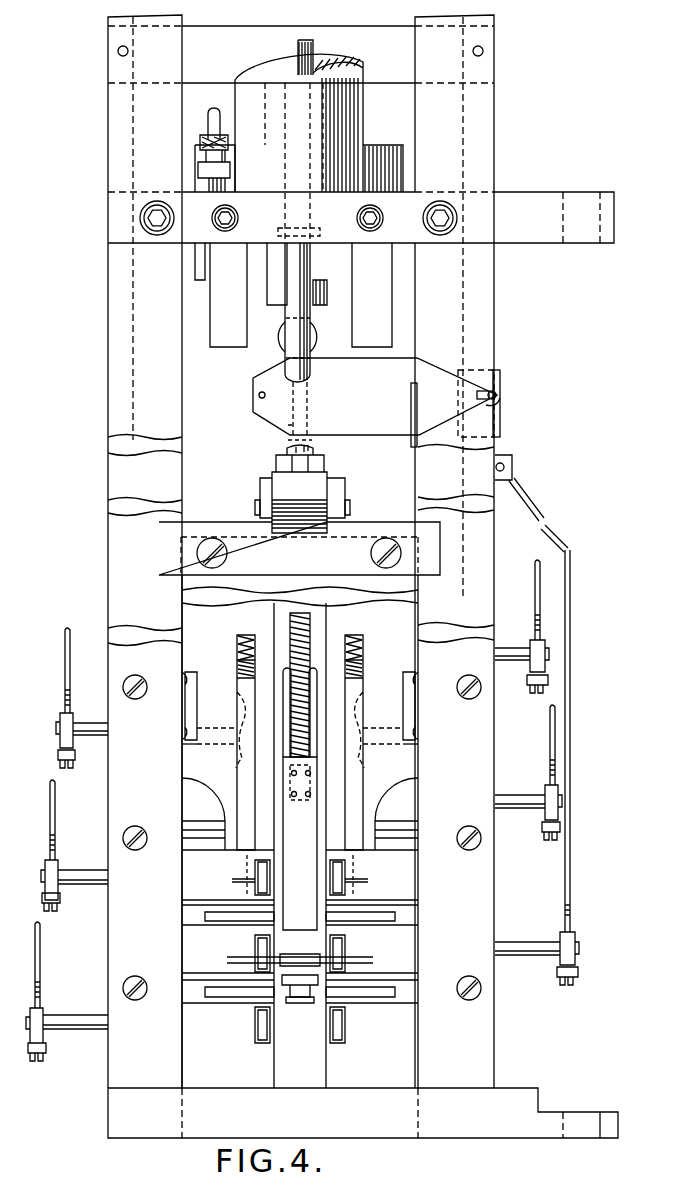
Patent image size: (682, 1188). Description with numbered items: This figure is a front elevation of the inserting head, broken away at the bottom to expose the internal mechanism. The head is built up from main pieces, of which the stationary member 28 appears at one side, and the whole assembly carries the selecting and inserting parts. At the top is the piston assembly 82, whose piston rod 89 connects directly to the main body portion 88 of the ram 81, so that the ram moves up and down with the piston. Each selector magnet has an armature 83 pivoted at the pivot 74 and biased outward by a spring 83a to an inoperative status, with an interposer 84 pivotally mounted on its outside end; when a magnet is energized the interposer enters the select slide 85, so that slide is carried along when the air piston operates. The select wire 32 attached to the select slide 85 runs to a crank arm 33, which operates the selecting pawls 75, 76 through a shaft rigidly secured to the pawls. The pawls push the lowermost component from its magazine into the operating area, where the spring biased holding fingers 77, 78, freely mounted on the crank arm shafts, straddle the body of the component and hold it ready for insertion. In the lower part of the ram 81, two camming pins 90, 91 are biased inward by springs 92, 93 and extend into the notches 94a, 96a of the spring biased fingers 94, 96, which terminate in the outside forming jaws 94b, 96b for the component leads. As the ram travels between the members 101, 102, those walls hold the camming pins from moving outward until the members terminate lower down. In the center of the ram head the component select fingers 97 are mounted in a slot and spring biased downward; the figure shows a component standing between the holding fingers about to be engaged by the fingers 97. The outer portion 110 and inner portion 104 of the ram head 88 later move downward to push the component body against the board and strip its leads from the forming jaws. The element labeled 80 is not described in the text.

The stationary member 28 is at (496, 1055).
The select wire 32 is at (64, 692).
The crank arm 33 is at (76, 749).
The armature pivot 74 is at (287, 421).
The selecting pawl 75 is at (287, 987).
The selecting pawl 76 is at (313, 993).
The holding finger 77 is at (262, 1029).
The holding finger 78 is at (340, 1029).
The stop plate 80 is at (411, 402).
The ram 81 is at (342, 482).
The piston assembly 82 is at (364, 138).
The armature 83 is at (433, 368).
The spring 83a is at (258, 395).
The interposer 84 is at (493, 400).
The select slide 85 is at (500, 382).
The main body portion 88 is at (414, 581).
The piston rod 89 is at (313, 311).
The camming pin 90 is at (216, 727).
The camming pin 91 is at (383, 727).
The spring 92 is at (204, 676).
The spring 93 is at (396, 676).
The spring biased finger 94 is at (244, 777).
The notch 94a is at (239, 694).
The forming jaw 94b is at (251, 872).
The spring biased finger 96 is at (355, 777).
The notch 96a is at (367, 690).
The forming jaw 96b is at (349, 872).
The component select fingers 97 is at (297, 927).
The member 101 is at (490, 914).
The member 102 is at (118, 923).
The inner portion 104 is at (265, 643).
The outer portion 110 is at (215, 794).